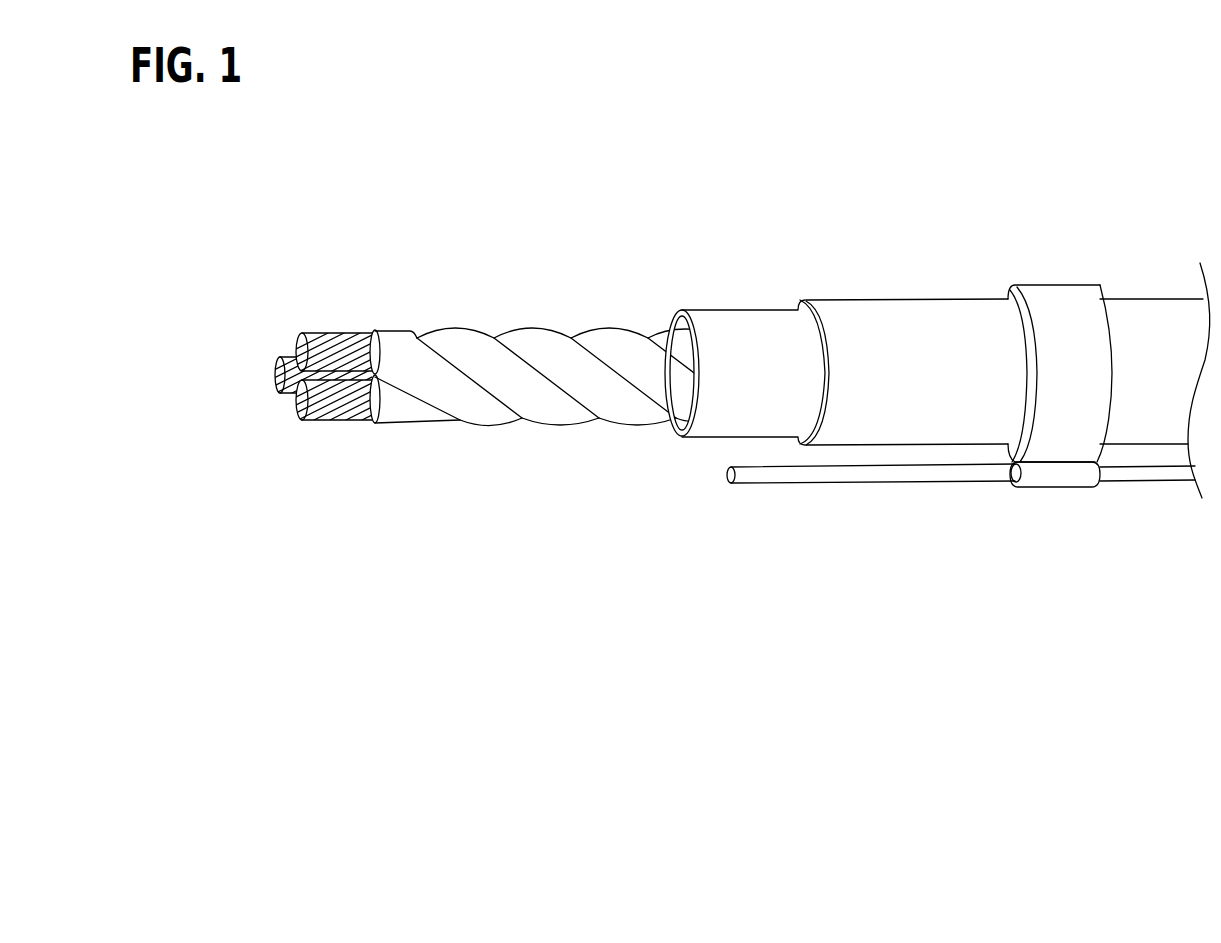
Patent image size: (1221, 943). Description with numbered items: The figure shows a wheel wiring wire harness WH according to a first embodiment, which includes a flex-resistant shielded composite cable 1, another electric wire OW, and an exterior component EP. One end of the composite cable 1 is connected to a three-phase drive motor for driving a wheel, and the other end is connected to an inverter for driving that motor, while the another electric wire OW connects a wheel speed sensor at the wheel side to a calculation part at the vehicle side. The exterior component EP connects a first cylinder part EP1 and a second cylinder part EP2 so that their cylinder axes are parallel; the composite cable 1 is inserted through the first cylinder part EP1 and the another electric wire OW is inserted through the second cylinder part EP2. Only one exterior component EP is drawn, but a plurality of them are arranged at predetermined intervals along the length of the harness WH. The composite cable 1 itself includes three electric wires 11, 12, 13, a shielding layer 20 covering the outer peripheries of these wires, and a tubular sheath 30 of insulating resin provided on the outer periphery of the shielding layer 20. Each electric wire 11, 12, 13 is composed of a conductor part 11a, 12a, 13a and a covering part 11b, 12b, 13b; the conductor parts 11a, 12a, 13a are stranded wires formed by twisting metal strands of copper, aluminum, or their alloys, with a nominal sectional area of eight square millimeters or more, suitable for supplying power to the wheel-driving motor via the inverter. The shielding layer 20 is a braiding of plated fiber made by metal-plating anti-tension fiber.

The flex-resistant shielded composite cable 1 is at (678, 215).
The electric wire 11 is at (333, 535).
The conductor part 11a is at (350, 405).
The covering part 11b is at (385, 412).
The electric wire 12 is at (410, 210).
The conductor part 12a is at (355, 335).
The covering part 12b is at (390, 335).
The electric wire 13 is at (176, 210).
The conductor part 13a is at (278, 370).
The covering part 13b is at (290, 350).
The shielding layer 20 is at (718, 420).
The tubular sheath 30 is at (825, 312).
The another electric wire OW is at (937, 478).
The exterior component EP is at (1079, 260).
The first cylinder part EP1 is at (1052, 298).
The second cylinder part EP2 is at (1067, 480).
The wheel wiring wire harness WH is at (1036, 105).